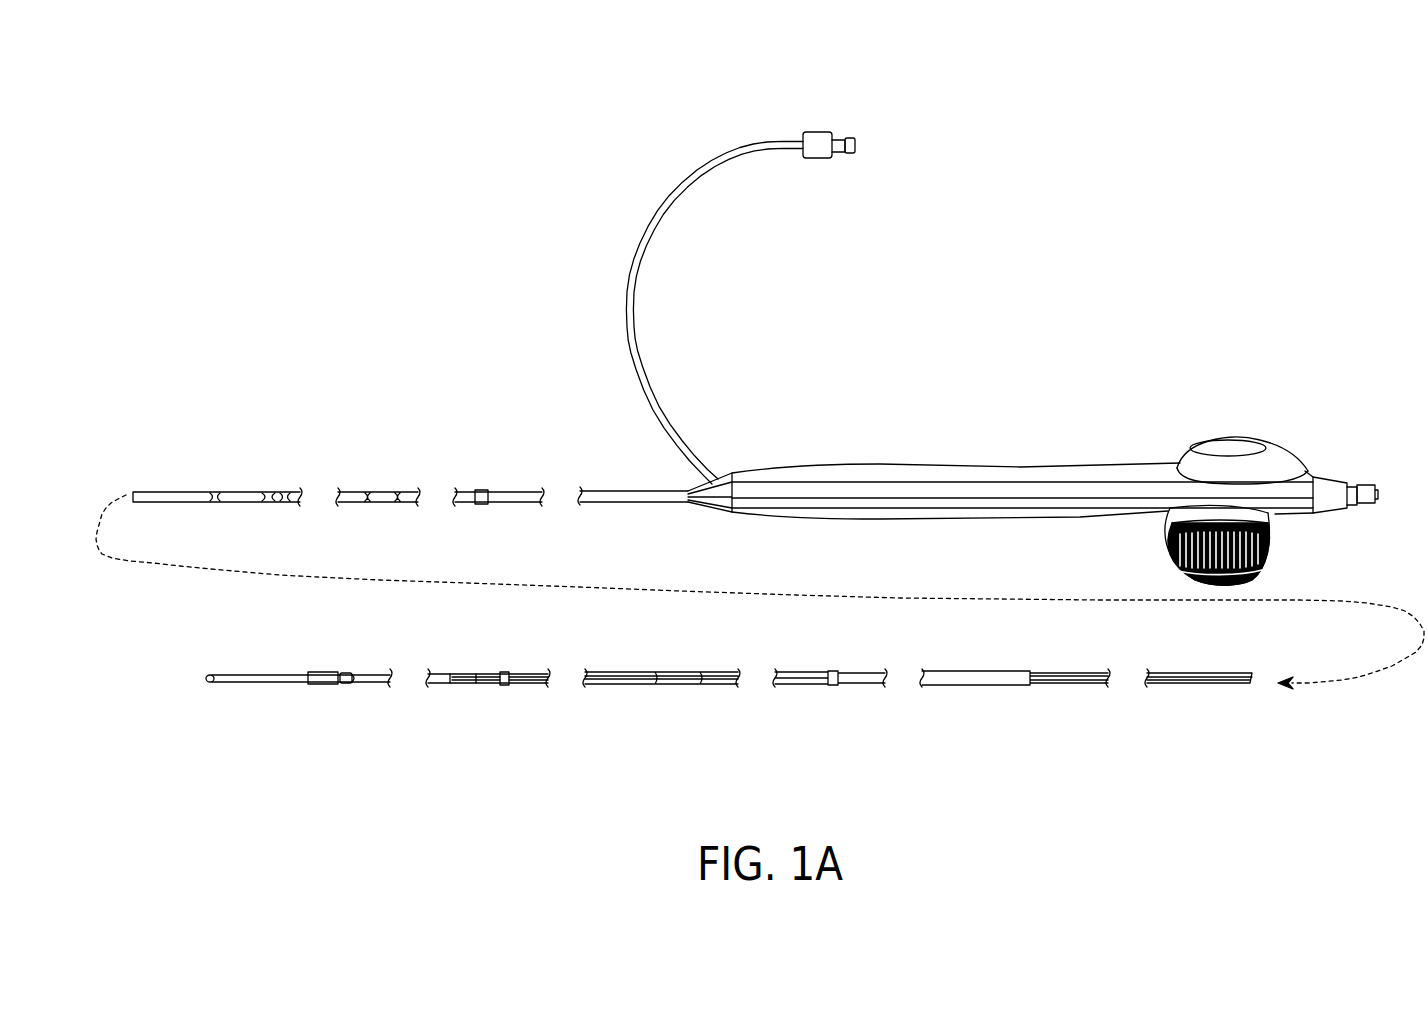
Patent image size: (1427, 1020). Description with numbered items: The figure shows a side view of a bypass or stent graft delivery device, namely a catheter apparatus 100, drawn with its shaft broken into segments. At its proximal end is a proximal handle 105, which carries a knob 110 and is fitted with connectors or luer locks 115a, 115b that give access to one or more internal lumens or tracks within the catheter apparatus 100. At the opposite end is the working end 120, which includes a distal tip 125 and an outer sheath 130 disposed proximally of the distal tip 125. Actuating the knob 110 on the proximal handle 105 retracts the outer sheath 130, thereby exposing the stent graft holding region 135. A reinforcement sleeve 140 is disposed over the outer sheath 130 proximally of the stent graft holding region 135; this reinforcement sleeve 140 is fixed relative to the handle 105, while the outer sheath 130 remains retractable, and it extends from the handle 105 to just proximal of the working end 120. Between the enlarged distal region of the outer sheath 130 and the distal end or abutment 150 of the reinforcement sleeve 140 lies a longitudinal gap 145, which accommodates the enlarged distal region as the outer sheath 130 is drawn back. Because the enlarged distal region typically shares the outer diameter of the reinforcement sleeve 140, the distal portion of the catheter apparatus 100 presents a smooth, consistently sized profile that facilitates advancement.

The catheter apparatus 100 is at (333, 95).
The proximal handle 105 is at (1047, 468).
The knob 110 is at (1273, 548).
The connector or luer lock 115a is at (1370, 483).
The connector or luer lock 115b is at (850, 158).
The working end 120 is at (253, 729).
The distal tip 125 is at (210, 672).
The outer sheath 130 is at (972, 686).
The stent graft holding region 135 is at (403, 724).
The reinforcement sleeve 140 is at (610, 686).
The longitudinal gap 145 is at (458, 672).
The abutment 150 is at (495, 672).